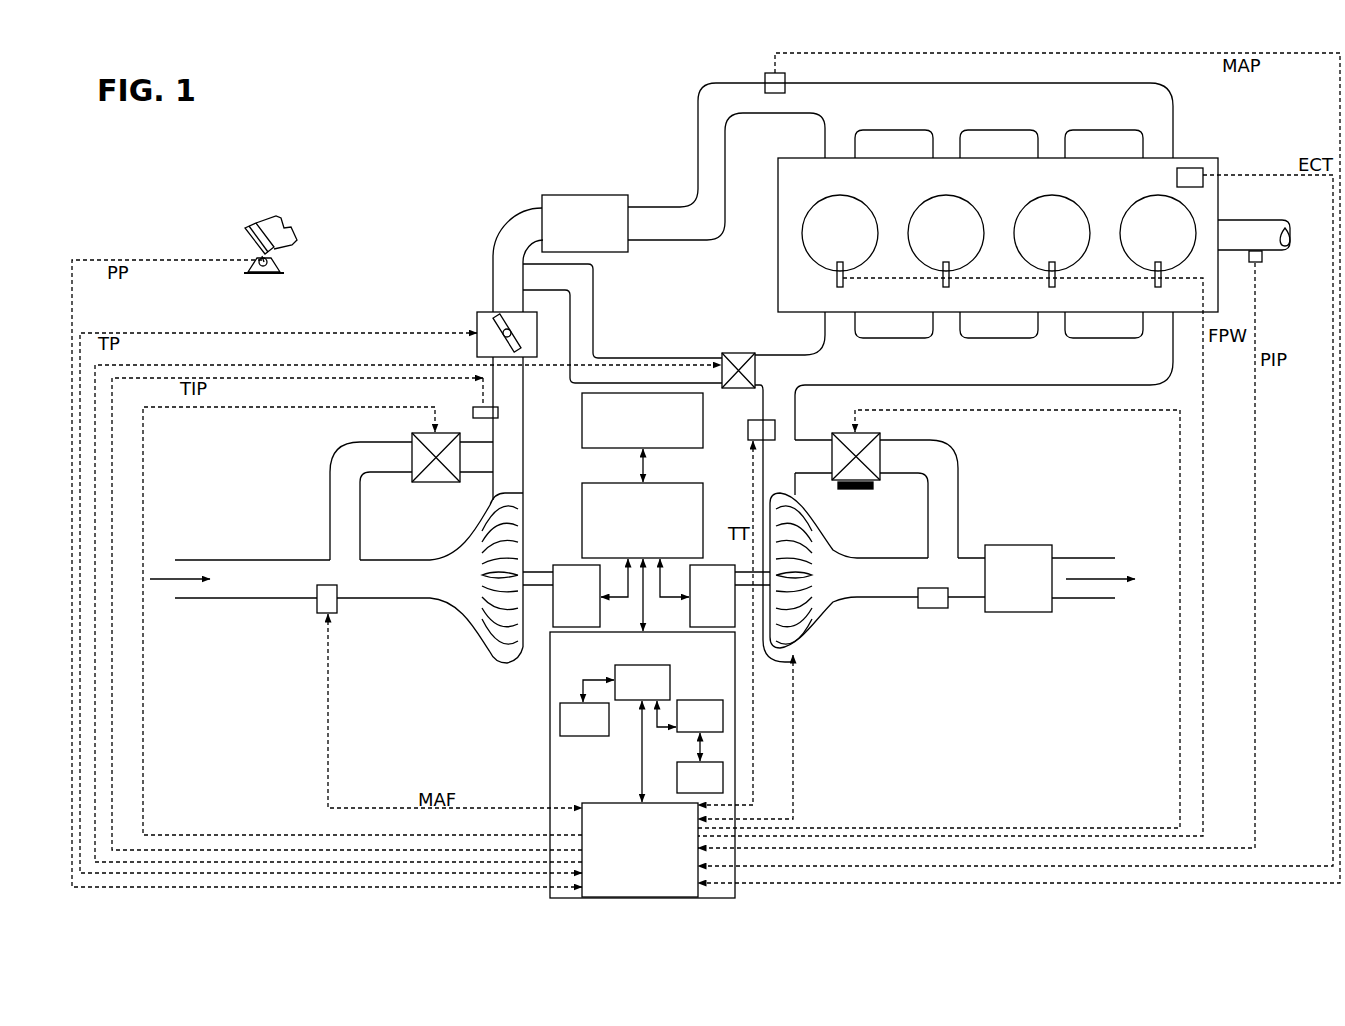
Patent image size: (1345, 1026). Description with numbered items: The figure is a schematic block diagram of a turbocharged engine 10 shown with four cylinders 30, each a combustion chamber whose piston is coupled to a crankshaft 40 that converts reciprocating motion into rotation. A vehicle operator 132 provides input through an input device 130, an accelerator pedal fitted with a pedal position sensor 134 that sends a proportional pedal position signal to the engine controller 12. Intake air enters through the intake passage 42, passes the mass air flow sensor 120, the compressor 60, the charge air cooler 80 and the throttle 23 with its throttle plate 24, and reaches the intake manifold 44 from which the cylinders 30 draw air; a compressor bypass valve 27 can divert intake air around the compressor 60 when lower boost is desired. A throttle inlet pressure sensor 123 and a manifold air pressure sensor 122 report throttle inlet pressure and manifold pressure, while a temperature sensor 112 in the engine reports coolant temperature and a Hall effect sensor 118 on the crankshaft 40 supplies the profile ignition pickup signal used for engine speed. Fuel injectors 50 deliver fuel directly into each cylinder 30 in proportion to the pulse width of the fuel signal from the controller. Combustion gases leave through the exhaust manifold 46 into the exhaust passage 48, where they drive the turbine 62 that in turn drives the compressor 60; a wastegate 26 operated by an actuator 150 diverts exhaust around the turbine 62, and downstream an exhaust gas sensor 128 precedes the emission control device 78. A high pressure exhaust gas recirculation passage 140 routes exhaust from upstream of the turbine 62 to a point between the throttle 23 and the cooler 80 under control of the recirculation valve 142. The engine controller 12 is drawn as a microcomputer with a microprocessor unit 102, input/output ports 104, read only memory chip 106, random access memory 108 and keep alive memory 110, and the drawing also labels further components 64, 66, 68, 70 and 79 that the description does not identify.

The engine 10 is at (1107, 189).
The engine controller 12 is at (600, 776).
The throttle 23 is at (483, 312).
The throttle plate 24 is at (520, 350).
The wastegate 26 is at (882, 440).
The compressor bypass valve 27 is at (412, 442).
The cylinder 30 is at (829, 243).
The crankshaft 40 is at (1260, 218).
The intake passage 42 is at (259, 585).
The intake manifold 44 is at (877, 115).
The exhaust manifold 46 is at (850, 376).
The exhaust passage 48 is at (889, 588).
The fuel injector 50 is at (838, 286).
The compressor 60 is at (480, 622).
The turbine 62 is at (810, 526).
The electric motor/generator 64 is at (701, 606).
The battery 66 is at (582, 423).
The turbo driver 68 is at (680, 482).
The electric motor 70 is at (566, 606).
The emission control device 78 is at (1007, 588).
The turbine speed sensor 79 is at (748, 432).
The charge air cooler 80 is at (548, 195).
The microprocessor unit 102 is at (612, 678).
The input/output ports 104 is at (688, 880).
The read only memory chip 106 is at (560, 730).
The random access memory 108 is at (685, 700).
The keep alive memory 110 is at (677, 772).
The temperature sensor 112 is at (1193, 168).
The Hall effect sensor 118 is at (1260, 263).
The mass air flow sensor 120 is at (337, 607).
The manifold air pressure sensor 122 is at (765, 75).
The throttle inlet pressure sensor 123 is at (475, 407).
The exhaust gas sensor 128 is at (932, 610).
The input device 130 is at (245, 240).
The vehicle operator 132 is at (290, 233).
The pedal position sensor 134 is at (273, 262).
The EGR passage 140 is at (625, 357).
The EGR valve 142 is at (738, 353).
The actuator 150 is at (862, 489).